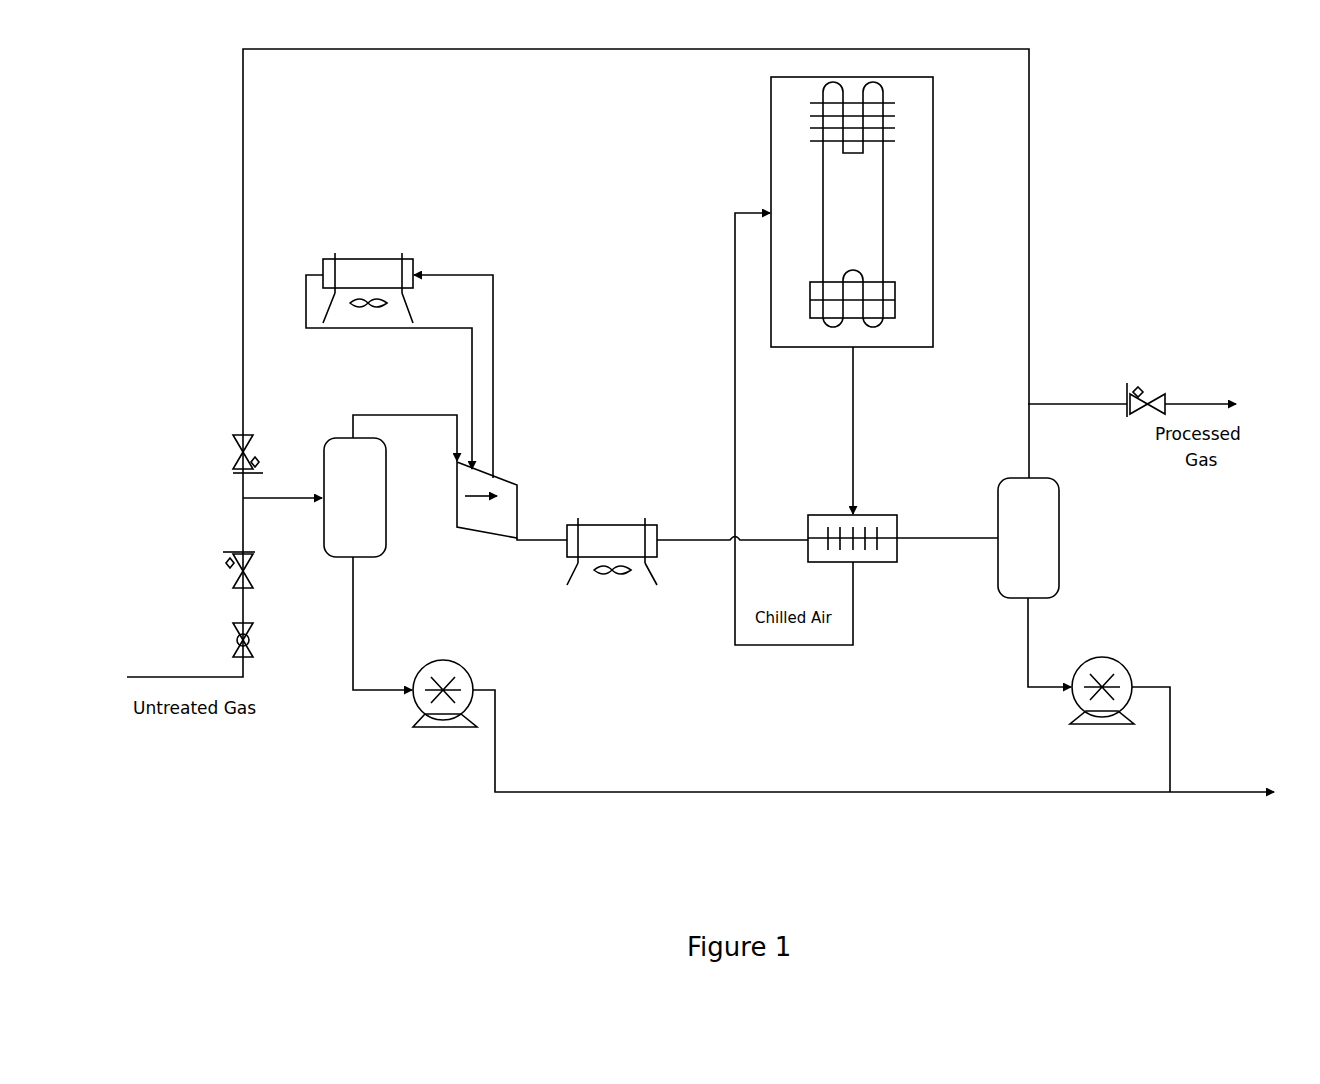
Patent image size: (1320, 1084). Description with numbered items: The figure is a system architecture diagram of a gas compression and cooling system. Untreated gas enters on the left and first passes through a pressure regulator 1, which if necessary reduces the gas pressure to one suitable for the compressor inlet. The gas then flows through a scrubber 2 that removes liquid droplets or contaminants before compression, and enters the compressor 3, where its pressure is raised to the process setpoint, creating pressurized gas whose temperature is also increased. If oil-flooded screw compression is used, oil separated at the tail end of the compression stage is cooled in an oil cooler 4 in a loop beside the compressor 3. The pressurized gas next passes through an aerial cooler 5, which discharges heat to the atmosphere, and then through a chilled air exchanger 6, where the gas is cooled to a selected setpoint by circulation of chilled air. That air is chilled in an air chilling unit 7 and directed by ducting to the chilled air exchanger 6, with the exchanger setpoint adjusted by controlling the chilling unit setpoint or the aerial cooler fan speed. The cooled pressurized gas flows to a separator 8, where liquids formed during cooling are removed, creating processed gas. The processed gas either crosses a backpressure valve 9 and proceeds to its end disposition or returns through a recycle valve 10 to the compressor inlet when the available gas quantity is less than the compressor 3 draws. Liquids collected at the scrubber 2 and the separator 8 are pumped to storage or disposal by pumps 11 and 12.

The pressure regulator 1 is at (220, 570).
The scrubber 2 is at (355, 497).
The compressor 3 is at (487, 517).
The oil cooler 4 is at (368, 268).
The aerial cooler 5 is at (612, 534).
The chilled air exchanger 6 is at (866, 525).
The air chilling unit 7 is at (852, 212).
The separator 8 is at (1028, 538).
The backpressure valve 9 is at (1146, 381).
The recycle valve 10 is at (266, 454).
The pump 11 is at (445, 718).
The pump 12 is at (1102, 715).